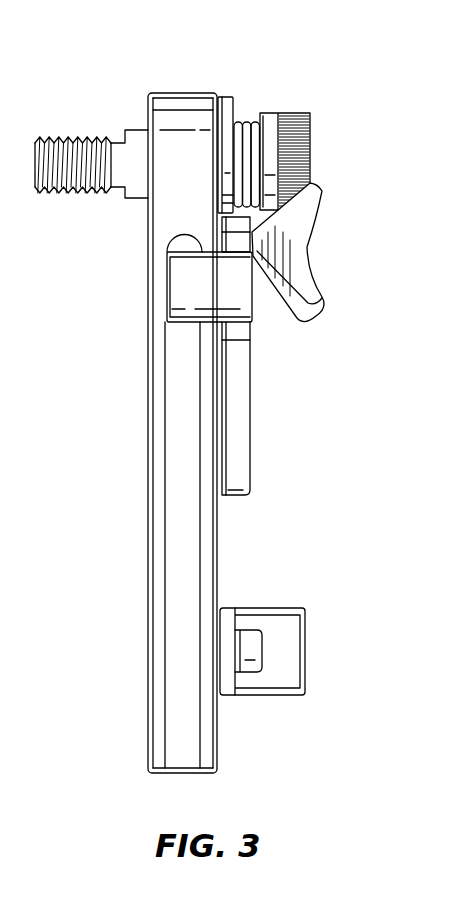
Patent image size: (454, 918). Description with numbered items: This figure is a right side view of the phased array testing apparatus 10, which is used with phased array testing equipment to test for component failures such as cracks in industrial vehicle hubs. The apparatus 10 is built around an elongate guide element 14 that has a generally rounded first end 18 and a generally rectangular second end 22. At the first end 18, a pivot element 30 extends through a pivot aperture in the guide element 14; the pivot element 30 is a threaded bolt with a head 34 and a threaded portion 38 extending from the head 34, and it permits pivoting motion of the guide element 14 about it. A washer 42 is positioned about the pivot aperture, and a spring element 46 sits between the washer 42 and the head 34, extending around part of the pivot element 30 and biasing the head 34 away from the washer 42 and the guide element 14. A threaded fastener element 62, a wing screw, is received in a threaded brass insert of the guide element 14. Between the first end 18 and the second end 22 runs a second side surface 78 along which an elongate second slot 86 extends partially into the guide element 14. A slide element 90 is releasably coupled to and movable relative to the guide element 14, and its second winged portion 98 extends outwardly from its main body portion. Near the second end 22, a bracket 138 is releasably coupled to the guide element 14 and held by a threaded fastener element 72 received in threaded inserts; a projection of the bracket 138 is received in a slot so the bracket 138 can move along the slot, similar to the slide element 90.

The phased array testing apparatus 10 is at (390, 115).
The guide element 14 is at (146, 662).
The first end 18 is at (168, 97).
The second end 22 is at (158, 773).
The pivot element 30 is at (88, 126).
The head 34 is at (292, 118).
The threaded portion 38 is at (62, 137).
The washer 42 is at (227, 100).
The spring element 46 is at (245, 122).
The threaded fastener element 62 is at (297, 272).
The threaded fastener element 72 is at (262, 660).
The second side surface 78 is at (146, 467).
The second slot 86 is at (185, 552).
The slide element 90 is at (256, 455).
The second winged portion 98 is at (194, 285).
The bracket 138 is at (292, 606).